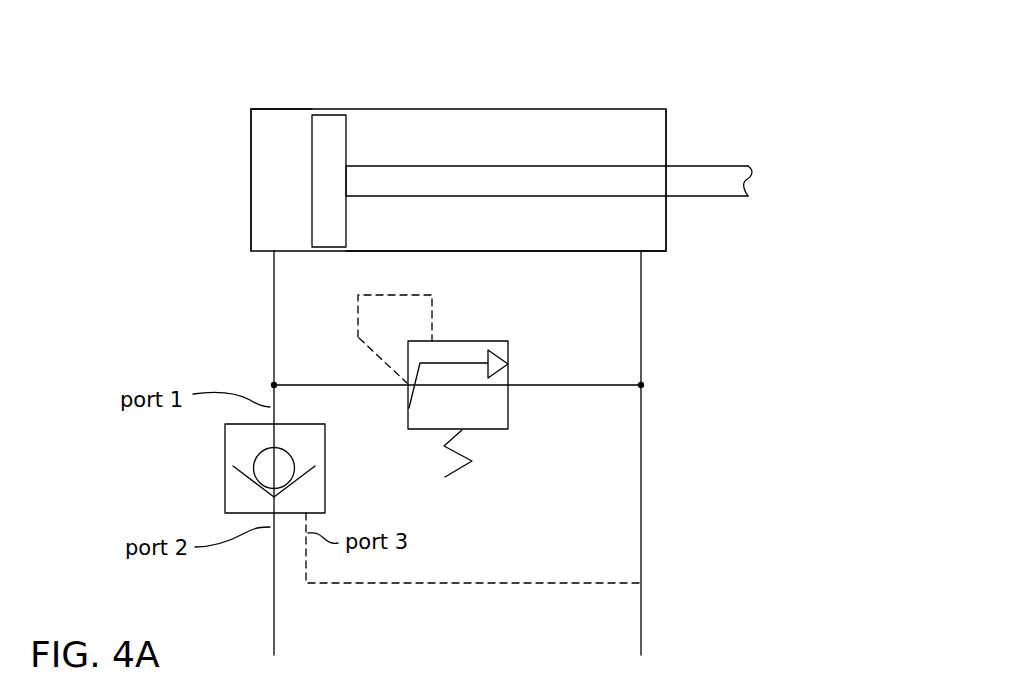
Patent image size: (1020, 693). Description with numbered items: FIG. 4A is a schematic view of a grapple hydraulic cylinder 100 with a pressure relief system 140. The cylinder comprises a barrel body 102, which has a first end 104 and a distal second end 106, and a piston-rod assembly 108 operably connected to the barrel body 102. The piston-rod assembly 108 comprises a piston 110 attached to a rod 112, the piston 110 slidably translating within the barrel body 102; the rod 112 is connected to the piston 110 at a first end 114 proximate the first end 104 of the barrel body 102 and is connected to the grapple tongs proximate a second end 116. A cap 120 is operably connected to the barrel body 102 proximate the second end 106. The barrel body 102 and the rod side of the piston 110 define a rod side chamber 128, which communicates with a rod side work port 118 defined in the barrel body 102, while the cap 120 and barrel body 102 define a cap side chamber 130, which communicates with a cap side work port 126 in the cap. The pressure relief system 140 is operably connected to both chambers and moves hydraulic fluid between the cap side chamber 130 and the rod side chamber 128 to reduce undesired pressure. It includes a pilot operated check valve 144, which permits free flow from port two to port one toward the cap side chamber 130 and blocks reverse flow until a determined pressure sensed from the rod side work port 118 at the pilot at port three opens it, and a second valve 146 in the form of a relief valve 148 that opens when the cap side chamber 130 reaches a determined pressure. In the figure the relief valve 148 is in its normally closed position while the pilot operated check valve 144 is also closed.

The grapple hydraulic cylinder 100 is at (696, 58).
The barrel body 102 is at (424, 109).
The first end 104 is at (606, 109).
The second end 106 is at (280, 109).
The piston-rod assembly 108 is at (757, 124).
The piston 110 is at (328, 143).
The rod 112 is at (508, 185).
The first end 114 is at (713, 179).
The second end 116 is at (348, 179).
The rod side work port 118 is at (643, 644).
The cap 120 is at (722, 692).
The cap side work port 126 is at (276, 644).
The rod side chamber 128 is at (627, 218).
The cap side chamber 130 is at (278, 166).
The pressure relief system 140 is at (720, 444).
The pilot operated check valve 144 is at (326, 473).
The second valve 146 is at (508, 343).
The relief valve 148 is at (508, 412).